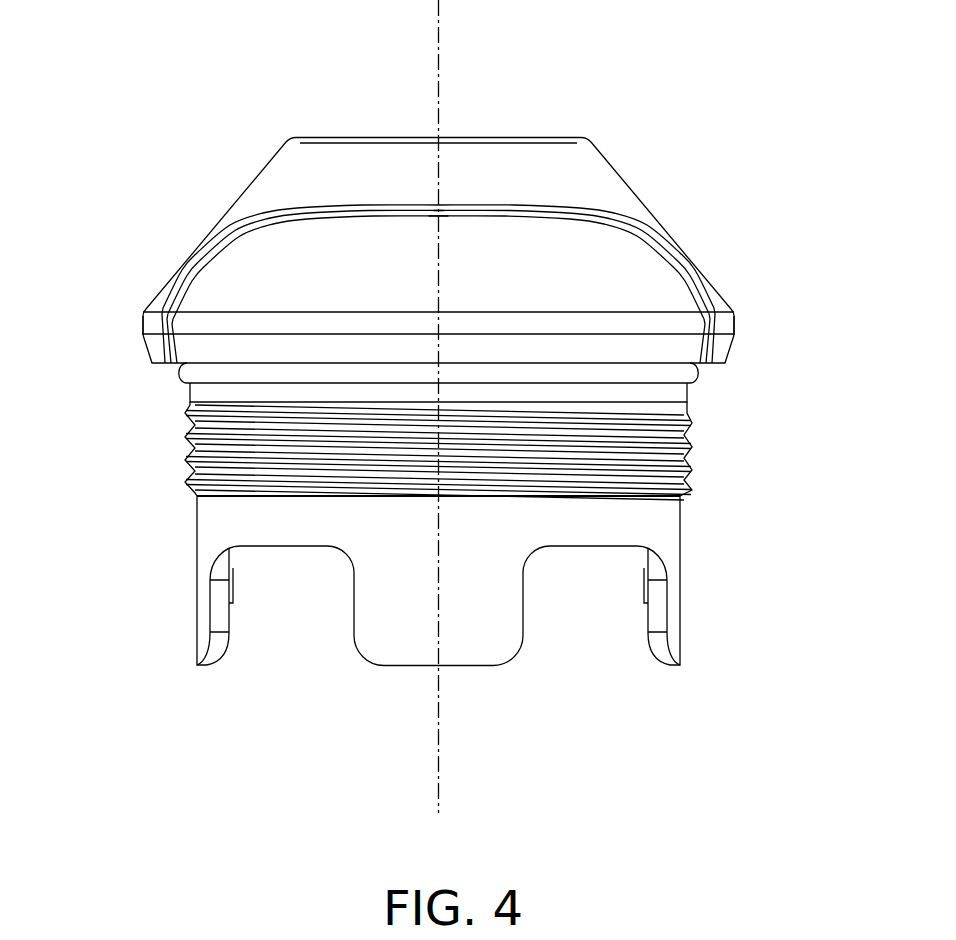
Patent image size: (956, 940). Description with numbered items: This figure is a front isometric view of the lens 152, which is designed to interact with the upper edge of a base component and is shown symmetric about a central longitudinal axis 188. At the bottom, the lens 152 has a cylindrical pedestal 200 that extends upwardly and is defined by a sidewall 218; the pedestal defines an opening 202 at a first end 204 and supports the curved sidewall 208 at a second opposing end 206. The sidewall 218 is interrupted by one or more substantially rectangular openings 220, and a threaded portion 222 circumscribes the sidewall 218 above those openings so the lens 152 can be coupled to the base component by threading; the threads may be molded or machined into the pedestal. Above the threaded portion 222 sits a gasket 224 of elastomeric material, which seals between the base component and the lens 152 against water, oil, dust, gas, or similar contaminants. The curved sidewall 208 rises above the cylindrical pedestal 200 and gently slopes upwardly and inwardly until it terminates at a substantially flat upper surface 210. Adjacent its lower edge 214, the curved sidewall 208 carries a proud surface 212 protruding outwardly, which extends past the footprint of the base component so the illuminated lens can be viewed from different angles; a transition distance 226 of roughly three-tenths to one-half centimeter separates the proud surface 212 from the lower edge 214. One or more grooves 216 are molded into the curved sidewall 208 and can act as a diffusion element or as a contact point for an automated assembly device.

The lens 152 is at (147, 203).
The central longitudinal axis 188 is at (440, 45).
The cylindrical pedestal 200 is at (206, 568).
The opening 202 is at (585, 598).
The first end 204 is at (468, 668).
The second opposing end 206 is at (642, 360).
The curved sidewall 208 is at (228, 192).
The substantially flat upper surface 210 is at (373, 137).
The proud surface 212 is at (733, 320).
The lower edge 214 is at (160, 365).
The grooves 216 is at (634, 236).
The sidewall 218 is at (386, 630).
The substantially rectangular openings 220 is at (285, 620).
The threaded portion 222 is at (670, 492).
The gasket 224 is at (690, 373).
The transition distance 226 is at (118, 294).